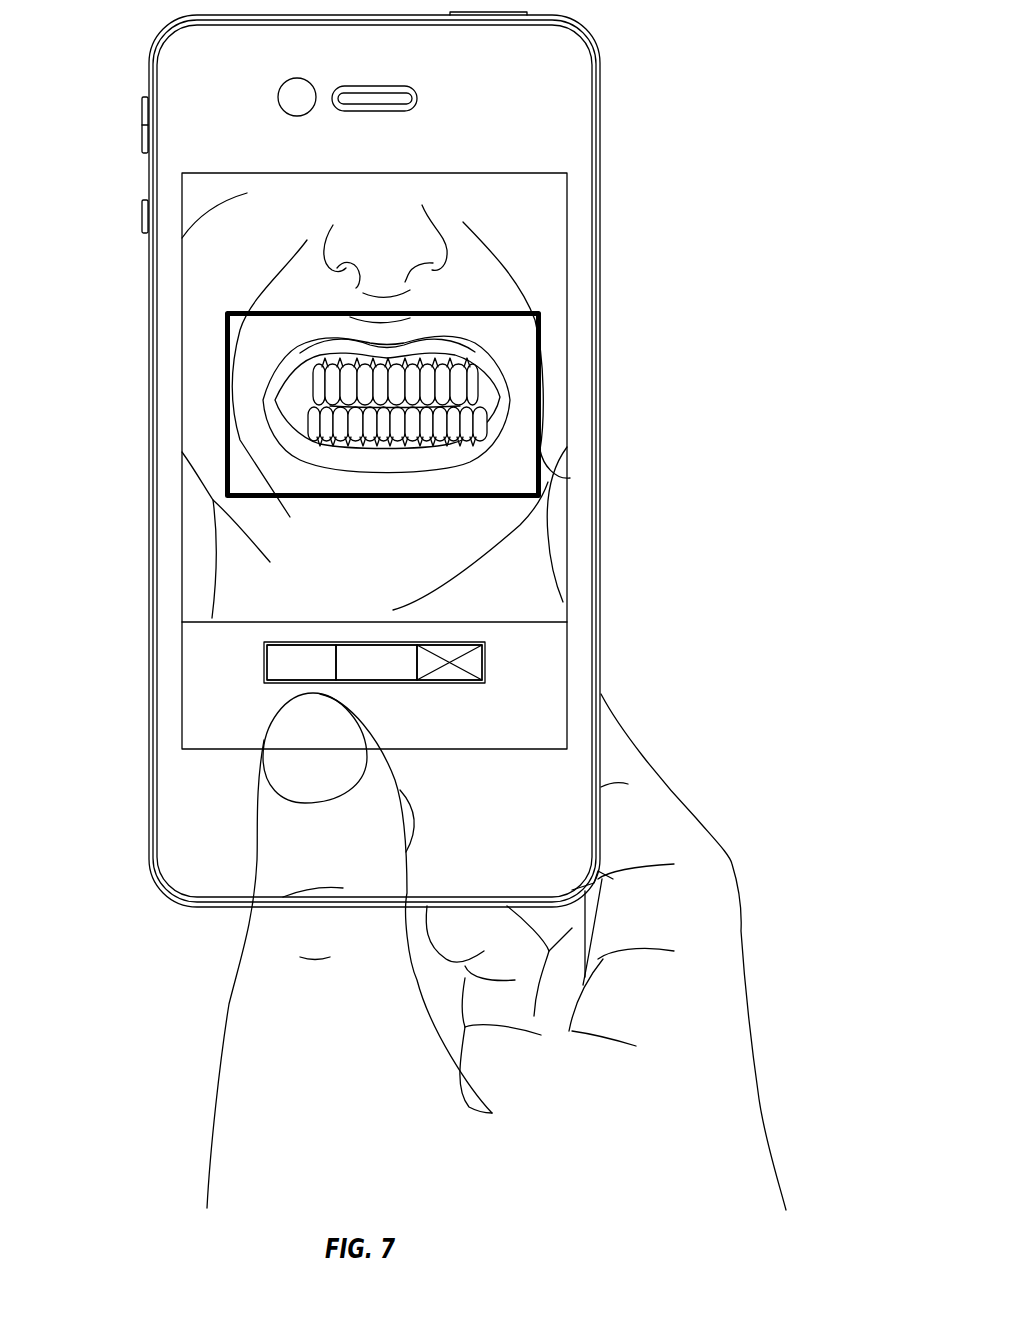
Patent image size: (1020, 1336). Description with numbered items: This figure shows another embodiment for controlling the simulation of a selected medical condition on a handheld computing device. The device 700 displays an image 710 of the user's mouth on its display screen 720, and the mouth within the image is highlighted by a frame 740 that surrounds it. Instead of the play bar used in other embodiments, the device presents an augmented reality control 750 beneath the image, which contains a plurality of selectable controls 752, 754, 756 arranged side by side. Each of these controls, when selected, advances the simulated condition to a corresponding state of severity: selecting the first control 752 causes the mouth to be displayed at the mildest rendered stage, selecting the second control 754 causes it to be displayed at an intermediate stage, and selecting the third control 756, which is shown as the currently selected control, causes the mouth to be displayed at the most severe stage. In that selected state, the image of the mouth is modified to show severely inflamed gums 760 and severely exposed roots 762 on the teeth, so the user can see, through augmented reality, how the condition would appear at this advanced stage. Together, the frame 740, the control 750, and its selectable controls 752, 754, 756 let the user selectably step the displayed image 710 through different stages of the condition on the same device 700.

The device 700 is at (559, 78).
The image 710 is at (550, 210).
The display screen 720 is at (530, 252).
The frame 740 is at (482, 505).
The augmented reality control 750 is at (258, 658).
The control 752 is at (300, 658).
The control 754 is at (377, 668).
The control 756 is at (475, 658).
The severely inflamed gums 760 is at (440, 353).
The severely exposed roots 762 is at (398, 438).